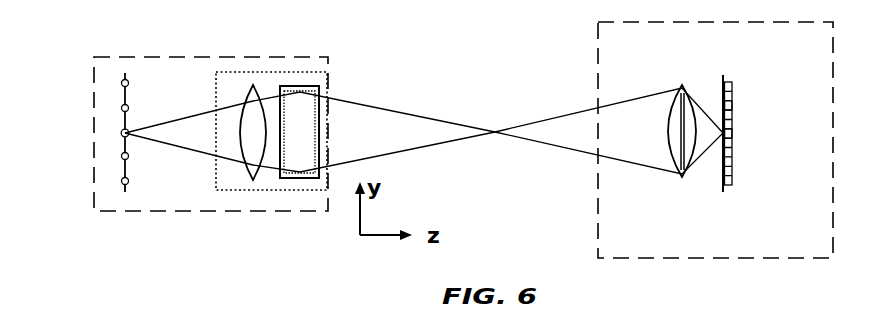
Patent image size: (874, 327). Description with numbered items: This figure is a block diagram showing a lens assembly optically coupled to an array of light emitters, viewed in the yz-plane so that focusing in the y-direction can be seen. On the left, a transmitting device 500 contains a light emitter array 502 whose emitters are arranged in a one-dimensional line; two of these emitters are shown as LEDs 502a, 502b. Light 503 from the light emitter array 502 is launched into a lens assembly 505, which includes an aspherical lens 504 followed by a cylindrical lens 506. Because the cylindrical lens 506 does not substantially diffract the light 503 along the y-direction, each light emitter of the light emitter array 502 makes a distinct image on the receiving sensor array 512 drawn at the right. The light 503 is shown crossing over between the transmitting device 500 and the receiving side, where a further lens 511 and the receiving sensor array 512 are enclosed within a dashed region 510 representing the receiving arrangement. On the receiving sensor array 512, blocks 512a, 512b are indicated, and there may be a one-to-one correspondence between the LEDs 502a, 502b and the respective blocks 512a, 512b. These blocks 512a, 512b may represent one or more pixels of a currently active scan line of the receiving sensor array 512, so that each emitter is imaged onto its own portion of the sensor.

The transmitting device 500 is at (147, 212).
The light emitter array 502 is at (122, 187).
The LED 502a is at (122, 108).
The LED 502b is at (122, 133).
The light 503 is at (420, 148).
The aspherical lens 504 is at (253, 182).
The lens assembly 505 is at (278, 73).
The cylindrical lens 506 is at (300, 178).
The detector module 510 is at (628, 259).
The lens 511 is at (682, 178).
The receiving sensor array 512 is at (732, 78).
The block 512a is at (733, 107).
The block 512b is at (733, 132).